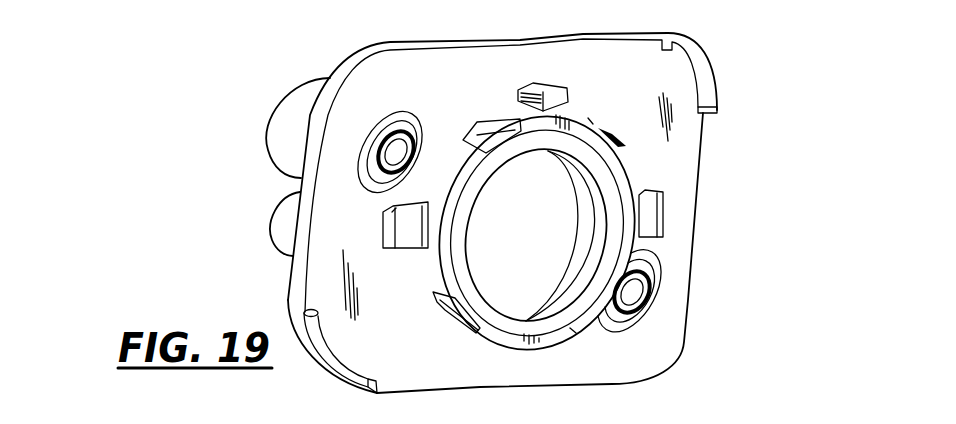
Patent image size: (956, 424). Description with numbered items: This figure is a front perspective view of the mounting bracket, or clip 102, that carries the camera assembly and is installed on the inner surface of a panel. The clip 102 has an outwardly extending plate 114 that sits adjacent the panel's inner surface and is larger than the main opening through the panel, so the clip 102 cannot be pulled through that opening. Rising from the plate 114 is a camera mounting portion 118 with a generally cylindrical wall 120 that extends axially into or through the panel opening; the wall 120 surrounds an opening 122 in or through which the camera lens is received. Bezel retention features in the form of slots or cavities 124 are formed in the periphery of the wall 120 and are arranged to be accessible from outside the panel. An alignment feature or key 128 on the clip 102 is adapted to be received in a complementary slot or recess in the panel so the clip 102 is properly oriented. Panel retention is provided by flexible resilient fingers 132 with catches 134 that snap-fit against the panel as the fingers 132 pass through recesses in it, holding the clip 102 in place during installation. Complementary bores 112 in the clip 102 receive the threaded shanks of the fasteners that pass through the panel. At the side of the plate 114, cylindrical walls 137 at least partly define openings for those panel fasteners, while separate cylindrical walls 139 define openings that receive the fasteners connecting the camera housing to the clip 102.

The clip 102 is at (708, 24).
The bores 112 is at (396, 146).
The plate 114 is at (683, 153).
The camera mounting portion 118 is at (592, 105).
The cylindrical wall 120 is at (423, 267).
The opening 122 is at (574, 191).
The slots or cavities 124 is at (494, 117).
The alignment feature or key 128 is at (557, 99).
The flexible resilient fingers 132 is at (387, 223).
The catches 134 is at (392, 212).
The cylindrical walls 137 is at (275, 113).
The cylindrical walls 139 is at (273, 236).